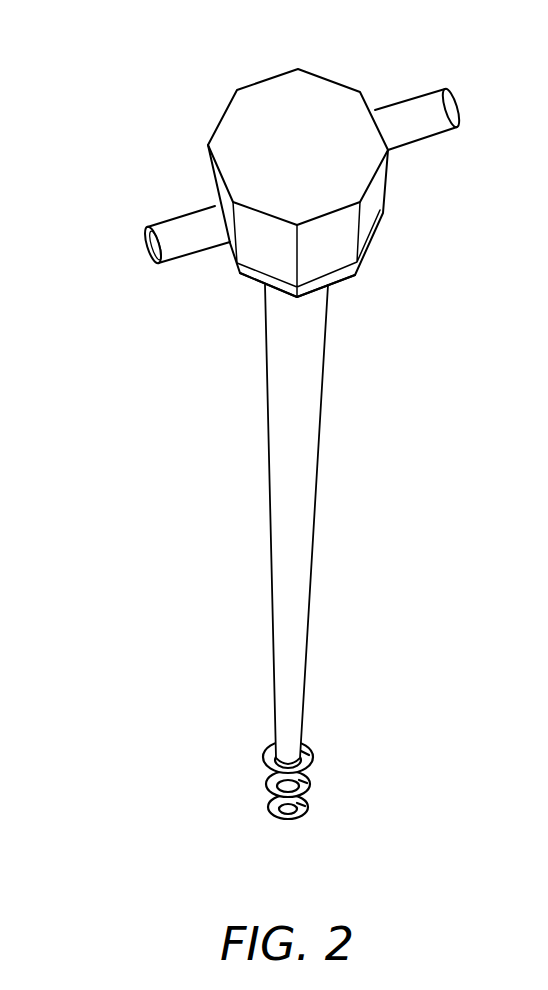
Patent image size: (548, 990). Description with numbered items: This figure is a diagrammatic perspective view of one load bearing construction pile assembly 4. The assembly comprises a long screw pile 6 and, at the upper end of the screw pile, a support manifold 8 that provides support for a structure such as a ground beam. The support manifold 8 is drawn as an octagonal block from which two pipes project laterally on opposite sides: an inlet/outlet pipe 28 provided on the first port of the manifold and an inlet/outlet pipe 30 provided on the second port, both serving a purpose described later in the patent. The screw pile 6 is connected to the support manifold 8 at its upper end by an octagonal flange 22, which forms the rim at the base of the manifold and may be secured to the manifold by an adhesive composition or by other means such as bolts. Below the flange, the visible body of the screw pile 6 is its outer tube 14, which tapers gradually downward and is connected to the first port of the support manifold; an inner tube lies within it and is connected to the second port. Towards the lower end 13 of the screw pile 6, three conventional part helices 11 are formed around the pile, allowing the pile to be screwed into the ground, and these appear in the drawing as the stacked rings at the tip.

The construction pile assembly 4 is at (248, 415).
The screw pile 6 is at (297, 680).
The support manifold 8 is at (212, 112).
The part helices 11 is at (259, 762).
The lower end 13 is at (320, 765).
The outer tube 14 is at (268, 557).
The octagonal flange 22 is at (243, 277).
The inlet/outlet pipe 28 is at (147, 242).
The inlet/outlet pipe 30 is at (407, 97).